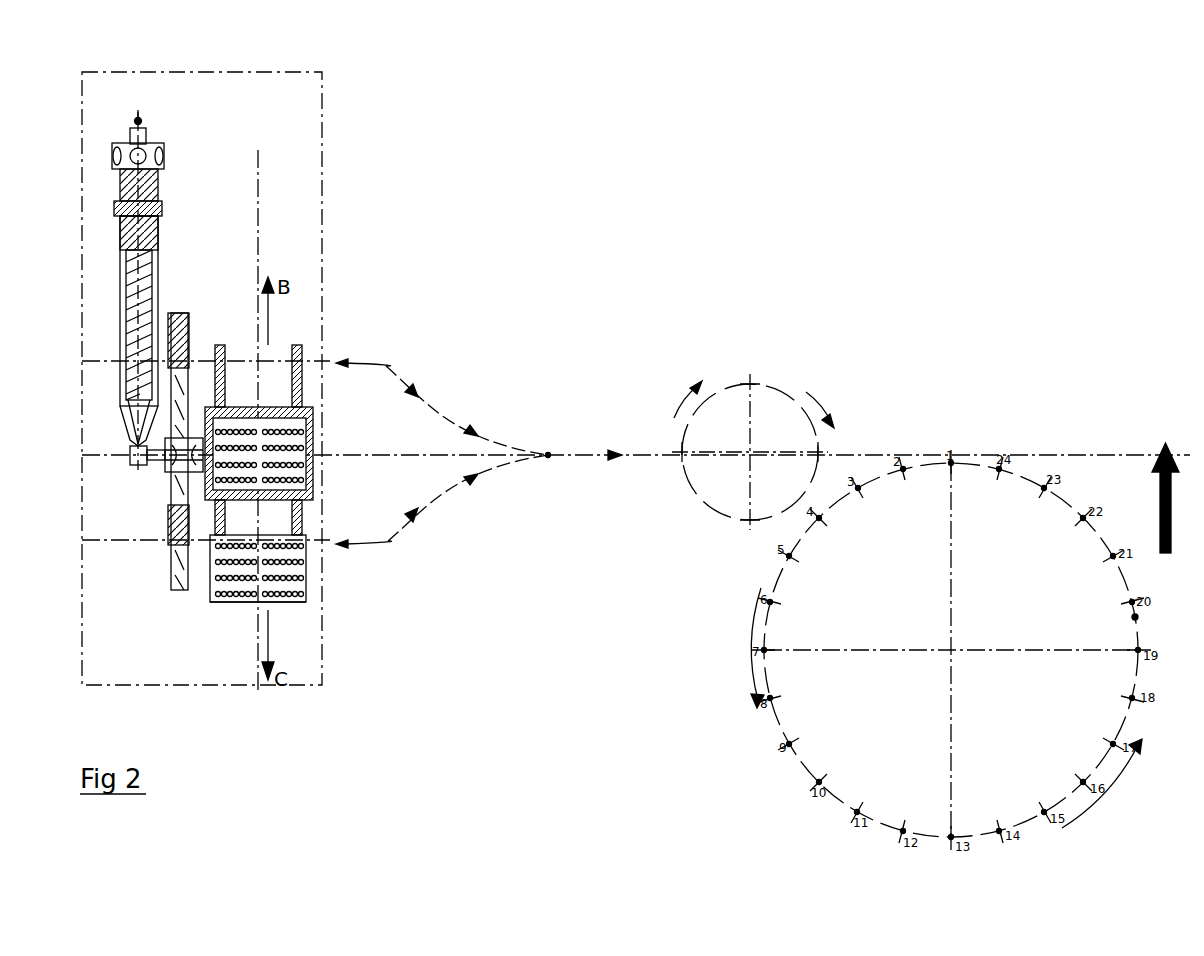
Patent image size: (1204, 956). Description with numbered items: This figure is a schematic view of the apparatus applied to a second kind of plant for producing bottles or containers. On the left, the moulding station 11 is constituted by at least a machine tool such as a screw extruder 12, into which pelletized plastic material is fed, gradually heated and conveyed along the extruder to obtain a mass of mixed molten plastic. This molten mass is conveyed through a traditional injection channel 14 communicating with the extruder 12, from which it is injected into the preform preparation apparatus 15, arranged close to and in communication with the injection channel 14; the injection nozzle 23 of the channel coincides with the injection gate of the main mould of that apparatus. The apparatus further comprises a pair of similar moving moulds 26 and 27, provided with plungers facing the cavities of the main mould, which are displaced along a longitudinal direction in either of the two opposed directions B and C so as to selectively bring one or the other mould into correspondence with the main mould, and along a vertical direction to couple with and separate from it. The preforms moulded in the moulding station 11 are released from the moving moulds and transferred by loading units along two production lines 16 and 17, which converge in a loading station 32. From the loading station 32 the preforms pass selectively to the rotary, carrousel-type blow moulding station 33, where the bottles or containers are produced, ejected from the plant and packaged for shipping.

The moulding station 11 is at (300, 128).
The screw extruder 12 is at (145, 230).
The injection channel 14 is at (180, 326).
The preform preparation apparatus 15 is at (225, 597).
The production line 16 is at (386, 366).
The production line 17 is at (388, 541).
The injection nozzle 23 is at (158, 466).
The moving mould 26 is at (300, 432).
The moving mould 27 is at (296, 597).
The loading station 32 is at (778, 392).
The rotary blow moulding station 33 is at (1135, 617).